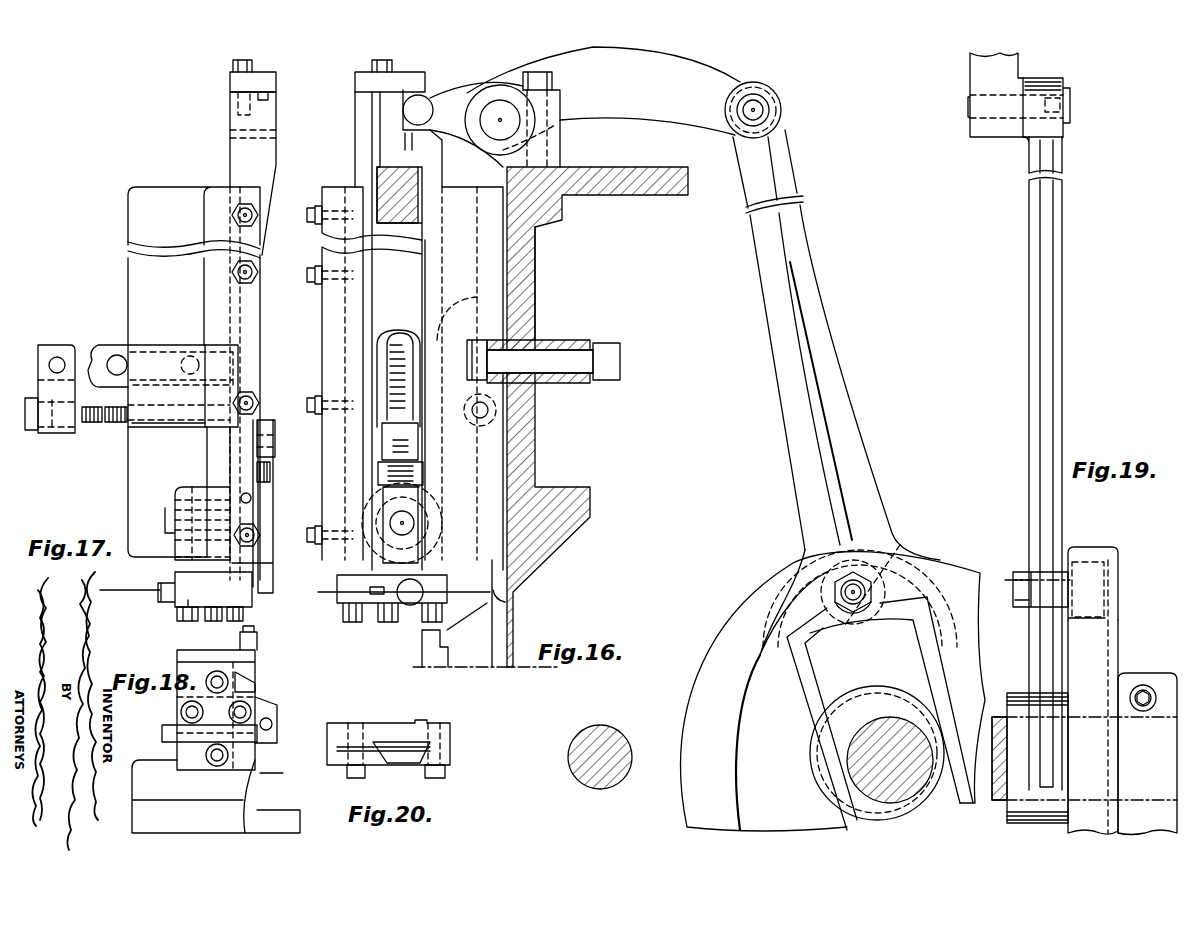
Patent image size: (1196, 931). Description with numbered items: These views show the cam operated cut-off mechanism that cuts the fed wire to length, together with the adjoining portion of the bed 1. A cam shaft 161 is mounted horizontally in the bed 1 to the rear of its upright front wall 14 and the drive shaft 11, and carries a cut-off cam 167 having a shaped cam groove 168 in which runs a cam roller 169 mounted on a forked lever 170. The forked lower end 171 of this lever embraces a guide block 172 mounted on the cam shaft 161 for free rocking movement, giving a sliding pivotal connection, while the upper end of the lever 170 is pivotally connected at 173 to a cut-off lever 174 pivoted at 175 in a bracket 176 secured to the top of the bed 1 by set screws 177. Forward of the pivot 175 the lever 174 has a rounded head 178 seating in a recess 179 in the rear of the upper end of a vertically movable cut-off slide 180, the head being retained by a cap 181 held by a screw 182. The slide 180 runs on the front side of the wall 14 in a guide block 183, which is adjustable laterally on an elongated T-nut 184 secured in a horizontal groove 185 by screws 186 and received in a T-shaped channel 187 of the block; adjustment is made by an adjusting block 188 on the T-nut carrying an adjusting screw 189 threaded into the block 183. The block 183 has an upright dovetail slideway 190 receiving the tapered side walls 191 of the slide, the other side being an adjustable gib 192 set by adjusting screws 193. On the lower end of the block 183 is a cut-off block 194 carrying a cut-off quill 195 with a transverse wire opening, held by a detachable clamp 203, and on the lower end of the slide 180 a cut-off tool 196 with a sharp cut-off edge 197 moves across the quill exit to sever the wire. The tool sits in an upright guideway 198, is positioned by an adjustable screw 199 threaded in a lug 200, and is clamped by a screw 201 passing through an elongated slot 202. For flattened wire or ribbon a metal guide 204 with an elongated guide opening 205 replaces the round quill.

In FIG. 16, the bed 1 is at (577, 492).
In FIG. 16, the drive shaft 11 is at (616, 735).
In FIG. 16, the upright front wall 14 is at (536, 445).
In FIG. 16, the cam shaft 161 is at (872, 730).
In FIG. 19, the cam shaft 161 is at (1005, 705).
In FIG. 16, the cut-off cam 167 is at (692, 682).
In FIG. 19, the cut-off cam 167 is at (1112, 596).
In FIG. 16, the cam groove 168 is at (736, 746).
In FIG. 19, the cam groove 168 is at (1110, 643).
In FIG. 16, the cam roller 169 is at (893, 562).
In FIG. 19, the cam roller 169 is at (1085, 562).
In FIG. 16, the forked lever 170 is at (848, 414).
In FIG. 19, the forked lever 170 is at (1029, 328).
In FIG. 16, the forked lower end 171 is at (790, 724).
In FIG. 16, the guide block 172 is at (888, 700).
In FIG. 16, the pivotal connection 173 is at (783, 107).
In FIG. 19, the pivotal connection 173 is at (999, 138).
In FIG. 16, the cut-off lever 174 is at (725, 82).
In FIG. 19, the cut-off lever 174 is at (969, 77).
In FIG. 16, the pivot 175 is at (500, 100).
In FIG. 16, the bracket 176 is at (562, 100).
In FIG. 16, the set screws 177 is at (553, 73).
In FIG. 16, the rounded head 178 is at (427, 106).
In FIG. 16, the recess 179 is at (447, 132).
In FIG. 17, the cut-off slide 180 is at (238, 167).
In FIG. 18, the cut-off slide 180 is at (258, 692).
In FIG. 16, the cut-off slide 180 is at (410, 284).
In FIG. 17, the cap 181 is at (266, 90).
In FIG. 16, the cap 181 is at (406, 82).
In FIG. 17, the screw 182 is at (232, 66).
In FIG. 16, the screw 182 is at (372, 65).
In FIG. 17, the guide block 183 is at (130, 221).
In FIG. 16, the guide block 183 is at (323, 351).
In FIG. 17, the T-nut 184 is at (112, 352).
In FIG. 16, the T-nut 184 is at (538, 340).
In FIG. 16, the groove 185 is at (548, 345).
In FIG. 16, the screws 186 is at (577, 382).
In FIG. 16, the channel 187 is at (484, 340).
In FIG. 17, the adjusting block 188 is at (54, 348).
In FIG. 17, the adjusting screw 189 is at (90, 424).
In FIG. 18, the dovetail slideway 190 is at (258, 785).
In FIG. 18, the tapered side walls 191 is at (257, 690).
In FIG. 18, the adjustable gib 192 is at (256, 680).
In FIG. 17, the adjusting screws 193 is at (258, 396).
In FIG. 18, the adjusting screws 193 is at (257, 640).
In FIG. 16, the adjusting screws 193 is at (311, 290).
In FIG. 17, the cut-off block 194 is at (188, 600).
In FIG. 18, the cut-off block 194 is at (180, 714).
In FIG. 20, the cut-off block 194 is at (365, 722).
In FIG. 16, the cut-off block 194 is at (342, 586).
In FIG. 17, the cut-off quill 195 is at (164, 584).
In FIG. 18, the cut-off quill 195 is at (162, 735).
In FIG. 16, the cut-off quill 195 is at (420, 590).
In FIG. 17, the cut-off tool 196 is at (270, 566).
In FIG. 17, the cut-off edge 197 is at (253, 599).
In FIG. 16, the cut-off edge 197 is at (410, 607).
In FIG. 16, the guideway 198 is at (419, 495).
In FIG. 17, the adjustable screw 199 is at (271, 468).
In FIG. 16, the adjustable screw 199 is at (424, 472).
In FIG. 17, the lug 200 is at (277, 443).
In FIG. 16, the lug 200 is at (421, 446).
In FIG. 16, the screw 201 is at (405, 522).
In FIG. 17, the elongated slot 202 is at (190, 497).
In FIG. 16, the elongated slot 202 is at (432, 528).
In FIG. 16, the detachable clamp 203 is at (380, 607).
In FIG. 20, the metal guide 204 is at (400, 745).
In FIG. 20, the elongated guide opening 205 is at (398, 766).